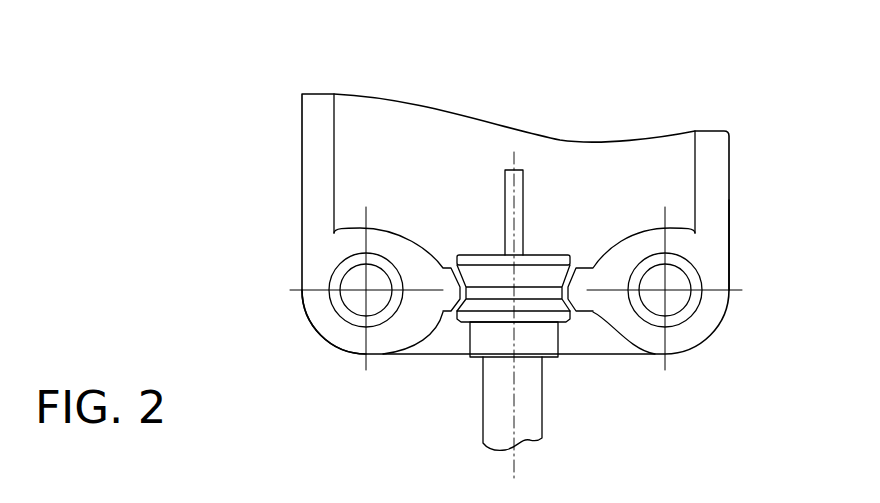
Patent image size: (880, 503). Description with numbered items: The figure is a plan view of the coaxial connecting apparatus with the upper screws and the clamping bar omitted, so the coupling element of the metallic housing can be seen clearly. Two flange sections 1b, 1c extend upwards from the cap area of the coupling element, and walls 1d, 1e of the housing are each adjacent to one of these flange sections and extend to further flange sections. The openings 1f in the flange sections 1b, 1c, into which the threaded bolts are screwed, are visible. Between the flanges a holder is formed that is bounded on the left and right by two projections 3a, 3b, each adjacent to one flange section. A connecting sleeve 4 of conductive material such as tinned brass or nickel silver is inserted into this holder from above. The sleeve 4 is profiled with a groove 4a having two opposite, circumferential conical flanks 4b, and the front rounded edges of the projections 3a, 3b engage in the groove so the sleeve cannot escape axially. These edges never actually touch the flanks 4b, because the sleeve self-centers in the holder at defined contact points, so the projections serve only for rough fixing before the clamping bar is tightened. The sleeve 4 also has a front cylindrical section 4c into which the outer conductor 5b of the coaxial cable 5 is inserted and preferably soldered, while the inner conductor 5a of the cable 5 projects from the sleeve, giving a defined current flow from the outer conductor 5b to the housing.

The flange section 1b is at (311, 325).
The flange section 1c is at (729, 253).
The wall 1d is at (317, 122).
The wall 1e is at (714, 158).
The openings 1f is at (350, 282).
The projection 3a is at (442, 267).
The projection 3b is at (595, 267).
The connecting sleeve 4 is at (535, 260).
The groove 4a is at (484, 288).
The conical flanks 4b is at (533, 275).
The front cylindrical section 4c is at (503, 358).
The coaxial cable 5 is at (565, 315).
The inner conductor 5a is at (523, 192).
The outer conductor 5b is at (543, 404).